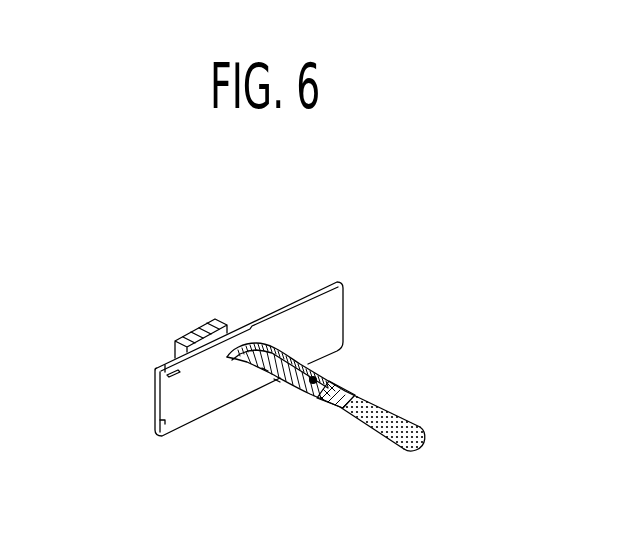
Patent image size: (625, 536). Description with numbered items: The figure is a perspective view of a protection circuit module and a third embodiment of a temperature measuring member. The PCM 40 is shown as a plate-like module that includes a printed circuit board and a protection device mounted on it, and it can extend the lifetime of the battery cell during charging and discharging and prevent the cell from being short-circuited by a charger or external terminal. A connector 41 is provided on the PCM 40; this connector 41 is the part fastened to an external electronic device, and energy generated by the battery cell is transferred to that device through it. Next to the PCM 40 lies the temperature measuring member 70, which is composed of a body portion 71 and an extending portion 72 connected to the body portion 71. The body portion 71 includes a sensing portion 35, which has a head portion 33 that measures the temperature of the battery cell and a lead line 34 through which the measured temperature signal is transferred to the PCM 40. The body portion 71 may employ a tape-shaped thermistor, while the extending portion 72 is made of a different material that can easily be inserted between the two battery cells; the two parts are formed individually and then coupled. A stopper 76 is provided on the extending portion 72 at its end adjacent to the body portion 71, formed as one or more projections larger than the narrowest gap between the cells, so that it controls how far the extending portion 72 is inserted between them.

The PCM 40 is at (277, 290).
The connector 41 is at (173, 343).
The temperature measuring member 70 is at (348, 335).
The body portion 71 is at (302, 340).
The stopper 76 is at (347, 385).
The extending portion 72 is at (401, 408).
The head portion 33 is at (276, 381).
The lead line 34 is at (265, 367).
The sensing portion 35 is at (250, 445).